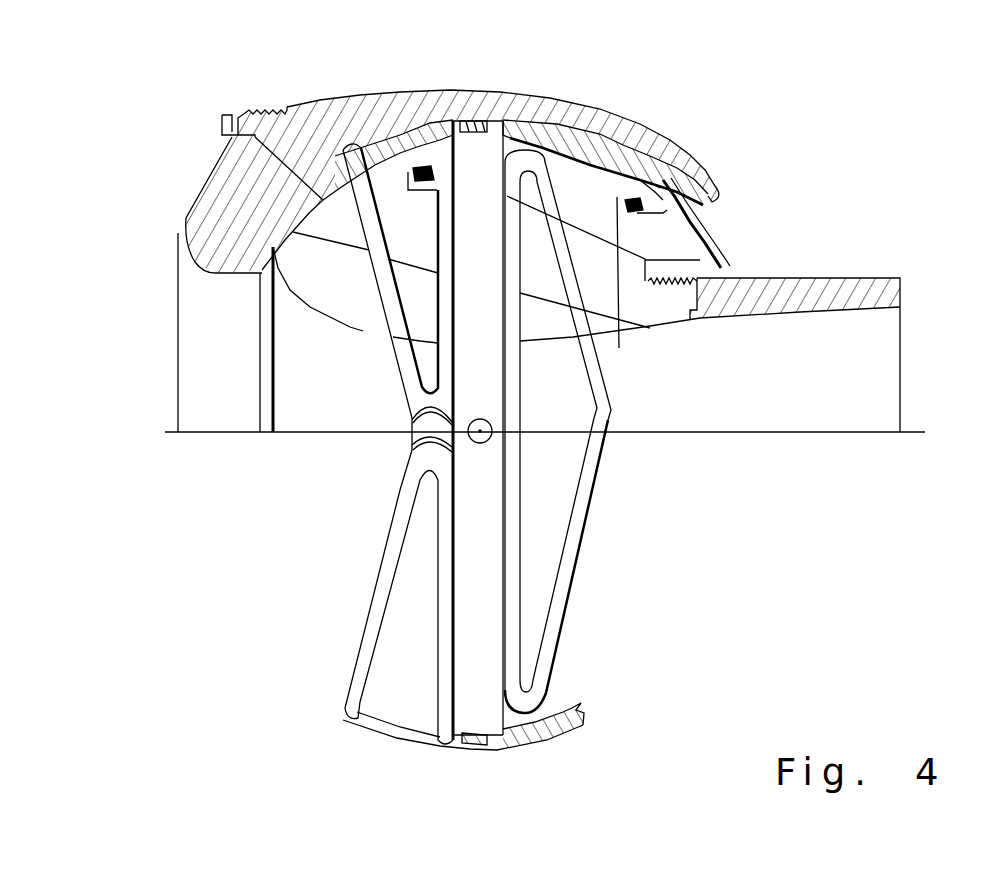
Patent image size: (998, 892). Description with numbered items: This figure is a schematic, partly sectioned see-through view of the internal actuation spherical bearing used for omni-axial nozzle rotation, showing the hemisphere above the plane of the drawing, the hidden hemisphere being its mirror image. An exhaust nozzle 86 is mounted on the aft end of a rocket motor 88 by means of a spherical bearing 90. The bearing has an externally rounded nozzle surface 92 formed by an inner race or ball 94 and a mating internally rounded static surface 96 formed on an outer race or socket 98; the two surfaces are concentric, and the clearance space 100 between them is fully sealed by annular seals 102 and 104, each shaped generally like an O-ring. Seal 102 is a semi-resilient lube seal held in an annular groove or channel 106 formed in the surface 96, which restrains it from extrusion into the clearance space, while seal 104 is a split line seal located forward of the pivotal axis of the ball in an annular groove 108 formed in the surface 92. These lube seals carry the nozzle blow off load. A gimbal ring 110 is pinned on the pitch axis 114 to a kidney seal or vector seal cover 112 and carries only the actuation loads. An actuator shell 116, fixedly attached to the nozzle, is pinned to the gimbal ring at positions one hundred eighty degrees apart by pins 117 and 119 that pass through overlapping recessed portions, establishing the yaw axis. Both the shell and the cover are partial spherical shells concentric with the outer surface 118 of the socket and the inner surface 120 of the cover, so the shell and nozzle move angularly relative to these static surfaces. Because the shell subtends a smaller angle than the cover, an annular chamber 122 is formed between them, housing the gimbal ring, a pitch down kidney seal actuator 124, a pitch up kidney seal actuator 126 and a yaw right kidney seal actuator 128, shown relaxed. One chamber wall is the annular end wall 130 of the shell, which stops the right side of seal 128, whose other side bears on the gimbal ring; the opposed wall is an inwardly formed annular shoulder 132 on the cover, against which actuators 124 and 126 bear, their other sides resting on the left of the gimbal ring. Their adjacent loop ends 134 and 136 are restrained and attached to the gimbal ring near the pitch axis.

The exhaust nozzle 86 is at (887, 296).
The rocket motor 88 is at (227, 167).
The spherical bearing 90 is at (732, 157).
The externally rounded nozzle surface 92 is at (700, 280).
The inner race or ball 94 is at (667, 260).
The internally rounded static surface 96 is at (612, 190).
The outer race or socket 98 is at (625, 200).
The clearance space 100 is at (660, 226).
The semi-resilient lube seal 102 is at (645, 206).
The split line seal 104 is at (420, 165).
The annular groove or channel 106 is at (622, 286).
The annular groove 108 is at (383, 145).
The gimbal ring 110 is at (483, 670).
The kidney seal cover 112 is at (712, 182).
The pitch axis 114 is at (492, 440).
The actuator shell 116 is at (735, 250).
The pin 117 is at (474, 122).
The outer surface of outer race or socket 118 is at (393, 187).
The pin 119 is at (476, 748).
The inner surface of kidney seal cover 120 is at (560, 130).
The annular chamber 122 is at (426, 137).
The pitch down kidney seal actuator 124 is at (405, 352).
The pitch up kidney seal actuator 126 is at (380, 607).
The yaw right kidney seal actuator 128 is at (560, 617).
The annular end wall of actuator shell 130 is at (593, 470).
The inwardly formed annular shoulder 132 is at (323, 192).
The loop end of pitch down kidney seal 134 is at (432, 412).
The loop end of pitch up kidney seal 136 is at (432, 452).